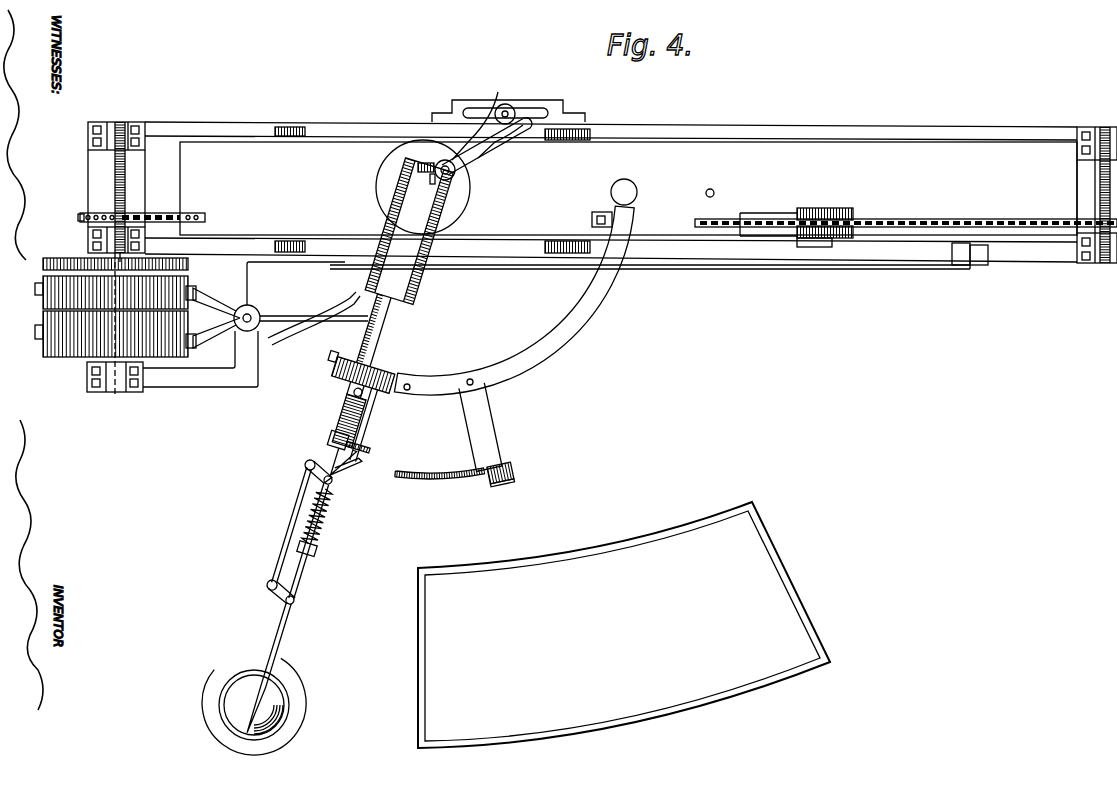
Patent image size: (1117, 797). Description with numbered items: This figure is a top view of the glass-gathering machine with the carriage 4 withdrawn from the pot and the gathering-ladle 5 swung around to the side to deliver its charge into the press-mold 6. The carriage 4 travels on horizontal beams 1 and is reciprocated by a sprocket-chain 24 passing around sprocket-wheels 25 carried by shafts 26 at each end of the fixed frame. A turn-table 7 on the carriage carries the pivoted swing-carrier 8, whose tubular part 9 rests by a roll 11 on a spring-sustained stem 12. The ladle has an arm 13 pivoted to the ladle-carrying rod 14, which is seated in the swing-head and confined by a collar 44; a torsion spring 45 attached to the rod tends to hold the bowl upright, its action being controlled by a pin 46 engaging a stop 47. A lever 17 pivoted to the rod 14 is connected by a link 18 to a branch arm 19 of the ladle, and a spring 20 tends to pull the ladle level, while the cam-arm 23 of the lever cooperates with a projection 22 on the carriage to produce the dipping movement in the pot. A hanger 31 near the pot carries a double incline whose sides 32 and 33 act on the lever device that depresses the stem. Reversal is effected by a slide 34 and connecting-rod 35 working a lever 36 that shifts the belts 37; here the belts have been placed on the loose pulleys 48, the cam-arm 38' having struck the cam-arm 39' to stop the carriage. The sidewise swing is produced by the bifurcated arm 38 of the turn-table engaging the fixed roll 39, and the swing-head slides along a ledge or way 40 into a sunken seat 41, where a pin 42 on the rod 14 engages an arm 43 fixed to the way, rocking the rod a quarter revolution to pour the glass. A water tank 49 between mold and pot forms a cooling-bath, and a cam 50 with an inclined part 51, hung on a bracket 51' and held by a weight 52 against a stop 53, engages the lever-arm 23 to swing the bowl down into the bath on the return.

The horizontal beams 1 is at (338, 124).
The carriage 4 is at (628, 188).
The gathering-ladle 5 is at (254, 705).
The press-mold 6 is at (254, 705).
The turn-table 7 is at (423, 187).
The swing-carrier 8 is at (408, 231).
The tubular part of carrier 9 is at (390, 341).
The roll 11 is at (339, 365).
The spring-sustained support stem 12 is at (633, 186).
The ladle arm 13 is at (291, 674).
The ladle-carrying rod 14 is at (325, 542).
The lever 17 is at (301, 470).
The link 18 is at (270, 518).
The branch arm 19 is at (262, 594).
The spring 20 is at (336, 522).
The projection 22 is at (713, 191).
The cam-arm 23 is at (353, 472).
The sprocket-chain 24 is at (598, 211).
The sprocket-wheels 25 is at (78, 217).
The shafts 26 is at (110, 172).
The hanger 31 is at (820, 247).
The incline side 32 is at (750, 213).
The incline side 33 is at (853, 210).
The slide 34 is at (982, 265).
The connecting-rod 35 is at (688, 269).
The lever 36 is at (248, 298).
The belts 37 is at (223, 317).
The arm 38 is at (487, 146).
The cam-arm 38' is at (314, 333).
The roll 39 is at (508, 121).
The cam-arm 39' is at (314, 318).
The ledge or way 40 is at (570, 335).
The sunken seat 41 is at (320, 382).
The pin or lug 42 is at (359, 452).
The arm 43 is at (378, 429).
The collar 44 is at (436, 168).
The torsion spring 45 is at (315, 410).
The pin or lug 46 is at (418, 166).
The stop 47 is at (425, 191).
The loose pulleys 48 is at (111, 324).
The tank 49 is at (624, 625).
The cam 50 is at (468, 480).
The inclined part of cam 51 is at (400, 489).
The bracket 51' is at (496, 427).
The weight 52 is at (514, 474).
The stop 53 is at (490, 487).